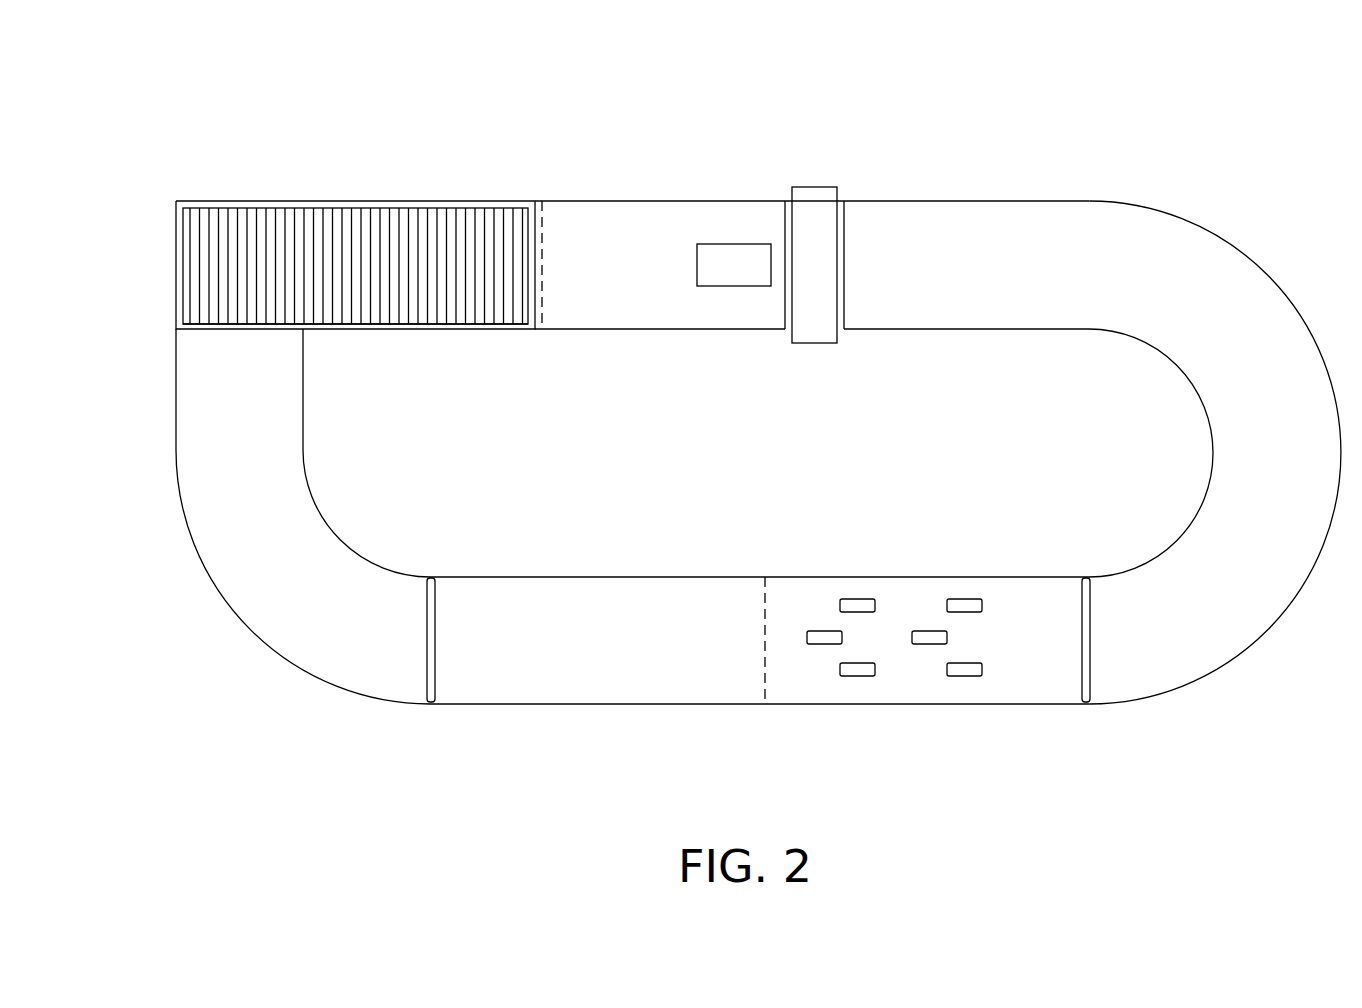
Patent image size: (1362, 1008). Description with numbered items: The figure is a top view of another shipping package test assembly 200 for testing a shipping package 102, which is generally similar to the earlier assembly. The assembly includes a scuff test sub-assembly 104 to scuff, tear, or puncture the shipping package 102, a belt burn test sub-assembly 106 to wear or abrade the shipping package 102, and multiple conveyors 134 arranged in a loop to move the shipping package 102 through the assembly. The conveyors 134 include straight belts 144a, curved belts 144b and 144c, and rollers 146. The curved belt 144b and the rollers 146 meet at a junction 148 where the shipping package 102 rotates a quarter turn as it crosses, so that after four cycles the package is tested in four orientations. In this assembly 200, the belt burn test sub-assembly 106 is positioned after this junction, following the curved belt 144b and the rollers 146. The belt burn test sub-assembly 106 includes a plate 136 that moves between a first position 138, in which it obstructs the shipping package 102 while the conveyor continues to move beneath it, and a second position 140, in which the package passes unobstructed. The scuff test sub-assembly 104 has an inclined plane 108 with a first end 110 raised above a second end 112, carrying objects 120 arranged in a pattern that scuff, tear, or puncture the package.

The shipping package test assembly 200 is at (1232, 70).
The belt burn test sub-assembly 106 is at (887, 102).
The rollers 146 is at (345, 201).
The junction 148 is at (245, 326).
The belt 144a is at (587, 201).
The first position 138 is at (787, 200).
The shipping package 102 is at (735, 244).
The plate 136 is at (812, 187).
The second position 140 is at (930, 201).
The belt 144c is at (1133, 220).
The scuff test sub-assembly 104 is at (925, 735).
The inclined plane 108 is at (1003, 680).
The objects 120 is at (912, 563).
The second end 112 is at (765, 678).
The first end 110 is at (1090, 655).
The belt 144b is at (343, 668).
The conveyor 134 is at (224, 677).